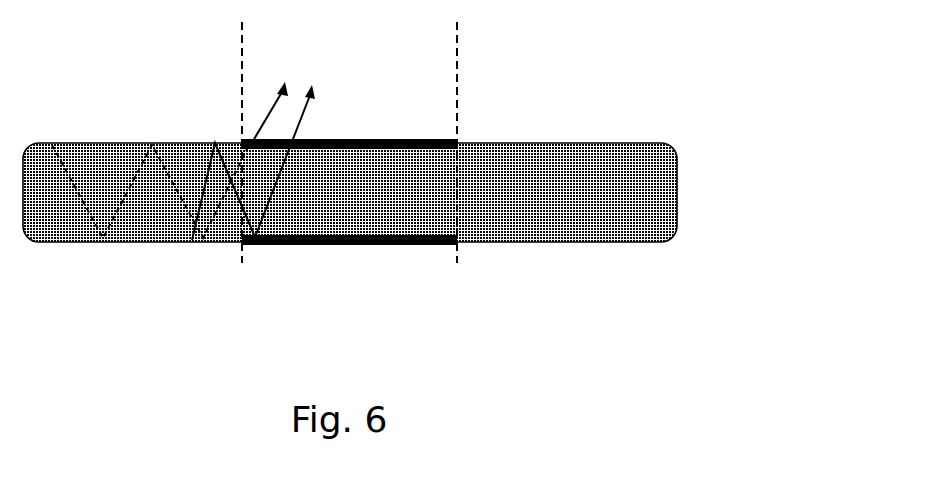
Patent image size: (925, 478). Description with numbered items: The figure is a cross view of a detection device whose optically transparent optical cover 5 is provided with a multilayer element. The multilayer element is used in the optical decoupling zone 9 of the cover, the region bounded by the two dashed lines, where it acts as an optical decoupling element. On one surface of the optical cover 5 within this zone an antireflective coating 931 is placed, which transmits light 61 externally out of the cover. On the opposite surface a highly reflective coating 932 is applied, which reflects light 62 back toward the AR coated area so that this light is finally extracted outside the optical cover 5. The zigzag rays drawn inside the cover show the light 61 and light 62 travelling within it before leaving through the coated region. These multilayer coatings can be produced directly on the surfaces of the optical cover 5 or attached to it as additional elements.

The optical cover 5 is at (662, 192).
The optical decoupling zone 9 is at (425, 108).
The antireflective coating 931 is at (350, 138).
The highly reflective coating 932 is at (349, 245).
The light 61 is at (72, 183).
The light 62 is at (200, 187).